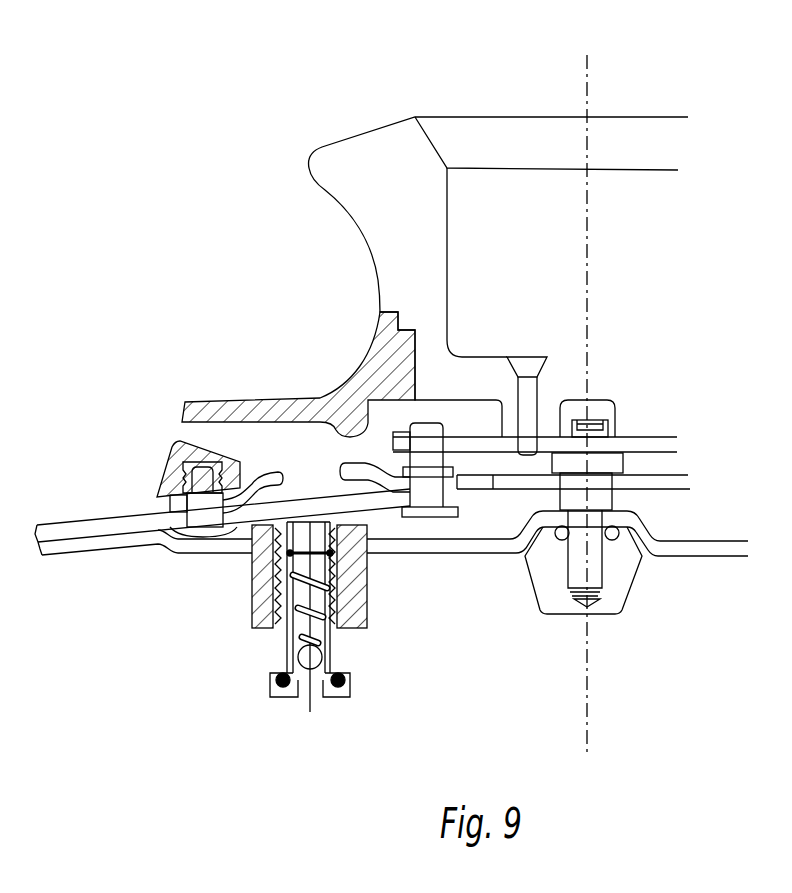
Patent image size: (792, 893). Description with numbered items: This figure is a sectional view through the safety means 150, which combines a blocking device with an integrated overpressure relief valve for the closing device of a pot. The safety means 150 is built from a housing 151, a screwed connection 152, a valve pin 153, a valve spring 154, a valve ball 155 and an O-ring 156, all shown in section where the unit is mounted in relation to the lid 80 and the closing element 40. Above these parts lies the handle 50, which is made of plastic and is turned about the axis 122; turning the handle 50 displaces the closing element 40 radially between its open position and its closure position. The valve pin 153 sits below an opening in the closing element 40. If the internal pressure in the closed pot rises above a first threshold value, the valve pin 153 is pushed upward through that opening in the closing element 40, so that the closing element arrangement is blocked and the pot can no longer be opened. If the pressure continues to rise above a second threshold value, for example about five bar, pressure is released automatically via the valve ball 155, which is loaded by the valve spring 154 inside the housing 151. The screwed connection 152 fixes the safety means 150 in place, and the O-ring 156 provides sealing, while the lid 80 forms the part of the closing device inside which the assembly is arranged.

The closing element 40 is at (83, 519).
The handle 50 is at (367, 183).
The lid 80 is at (183, 548).
The axis 122 is at (587, 88).
The safety means 150 is at (368, 622).
The housing 151 is at (343, 643).
The screwed connection 152 is at (363, 575).
The valve pin 153 is at (295, 688).
The valve spring 154 is at (317, 632).
The valve ball 155 is at (313, 660).
The O-ring 156 is at (280, 678).